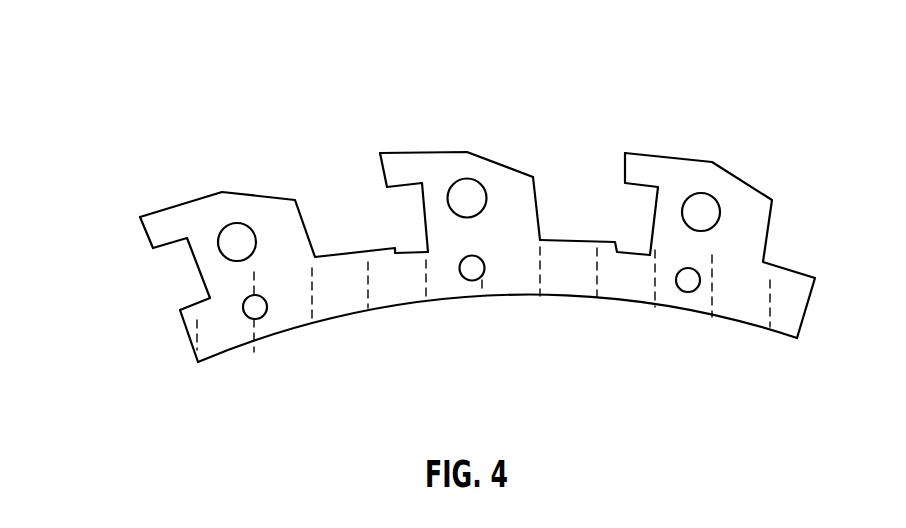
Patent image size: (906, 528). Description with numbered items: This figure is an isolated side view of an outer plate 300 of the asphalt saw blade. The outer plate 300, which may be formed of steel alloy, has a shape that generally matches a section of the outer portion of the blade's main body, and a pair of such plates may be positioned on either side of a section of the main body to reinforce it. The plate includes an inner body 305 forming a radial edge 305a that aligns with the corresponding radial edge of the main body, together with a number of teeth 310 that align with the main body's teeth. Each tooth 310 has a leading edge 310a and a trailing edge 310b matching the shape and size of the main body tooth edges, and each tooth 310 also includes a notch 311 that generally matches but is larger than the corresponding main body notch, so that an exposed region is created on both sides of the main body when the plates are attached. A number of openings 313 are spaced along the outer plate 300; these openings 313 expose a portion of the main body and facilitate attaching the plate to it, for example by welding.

The outer plate 300 is at (146, 77).
The inner body 305 is at (332, 302).
The radial edge 305a is at (332, 257).
The tooth 310 is at (295, 200).
The leading edge 310a is at (377, 157).
The trailing edge 310b is at (542, 177).
The notch 311 is at (176, 279).
The openings 313 is at (472, 268).